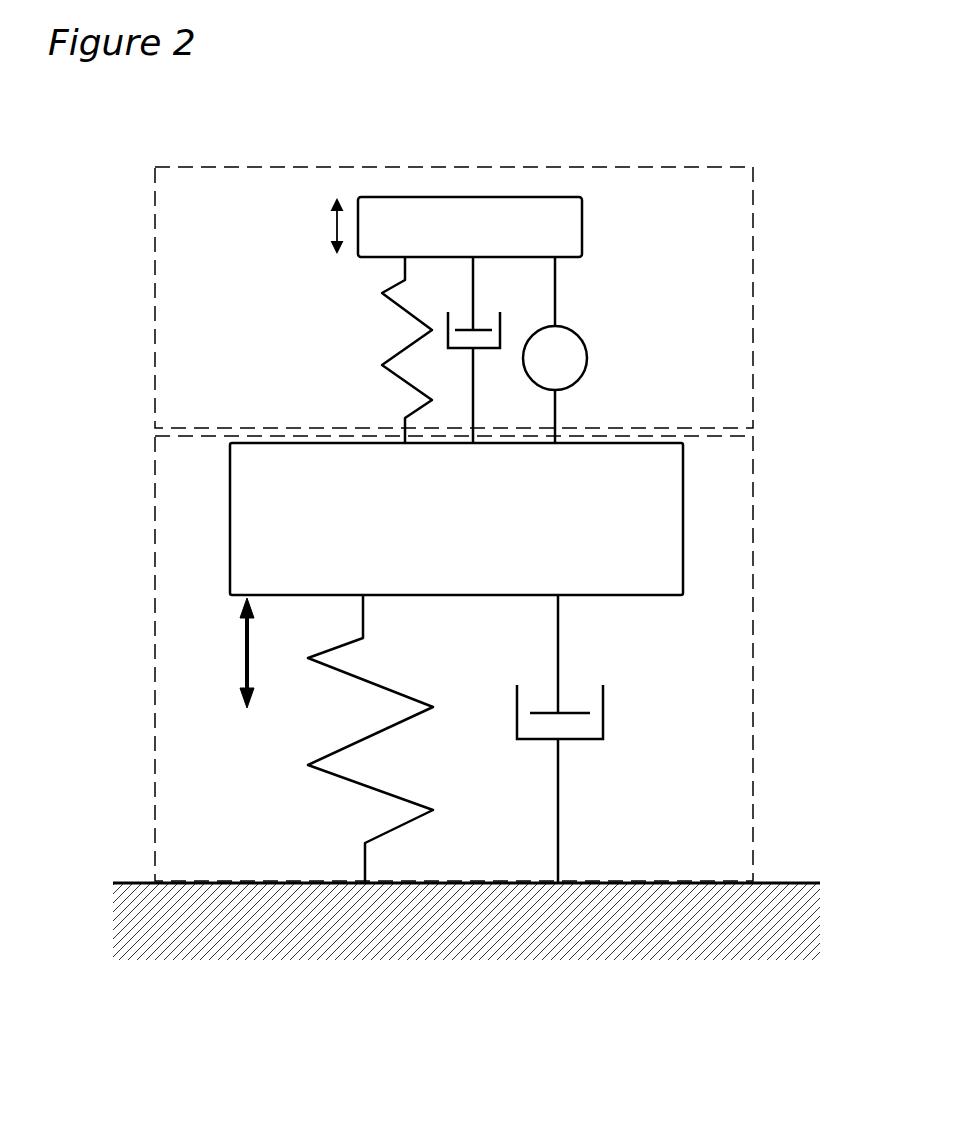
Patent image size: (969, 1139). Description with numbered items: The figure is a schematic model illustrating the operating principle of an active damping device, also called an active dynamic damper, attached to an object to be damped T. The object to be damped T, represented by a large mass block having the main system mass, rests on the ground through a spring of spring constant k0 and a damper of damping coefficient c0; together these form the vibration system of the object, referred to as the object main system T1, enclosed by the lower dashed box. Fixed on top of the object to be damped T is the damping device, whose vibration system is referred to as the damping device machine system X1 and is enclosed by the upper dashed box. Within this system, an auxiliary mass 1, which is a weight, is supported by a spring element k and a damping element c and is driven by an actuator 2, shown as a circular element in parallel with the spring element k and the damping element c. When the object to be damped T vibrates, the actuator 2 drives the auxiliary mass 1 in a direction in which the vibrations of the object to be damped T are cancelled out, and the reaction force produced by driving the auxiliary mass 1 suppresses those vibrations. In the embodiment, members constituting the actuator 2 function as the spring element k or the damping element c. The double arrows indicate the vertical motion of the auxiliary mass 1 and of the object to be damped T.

The auxiliary mass 1 is at (582, 215).
The actuator 2 is at (614, 366).
The damping device machine system X1 is at (753, 203).
The object main system T1 is at (753, 471).
The object to be damped T is at (683, 537).
The spring element k is at (382, 293).
The damping element c is at (500, 312).
The spring constant of the object main system k0 is at (359, 738).
The damping coefficient of the object main system c0 is at (560, 738).